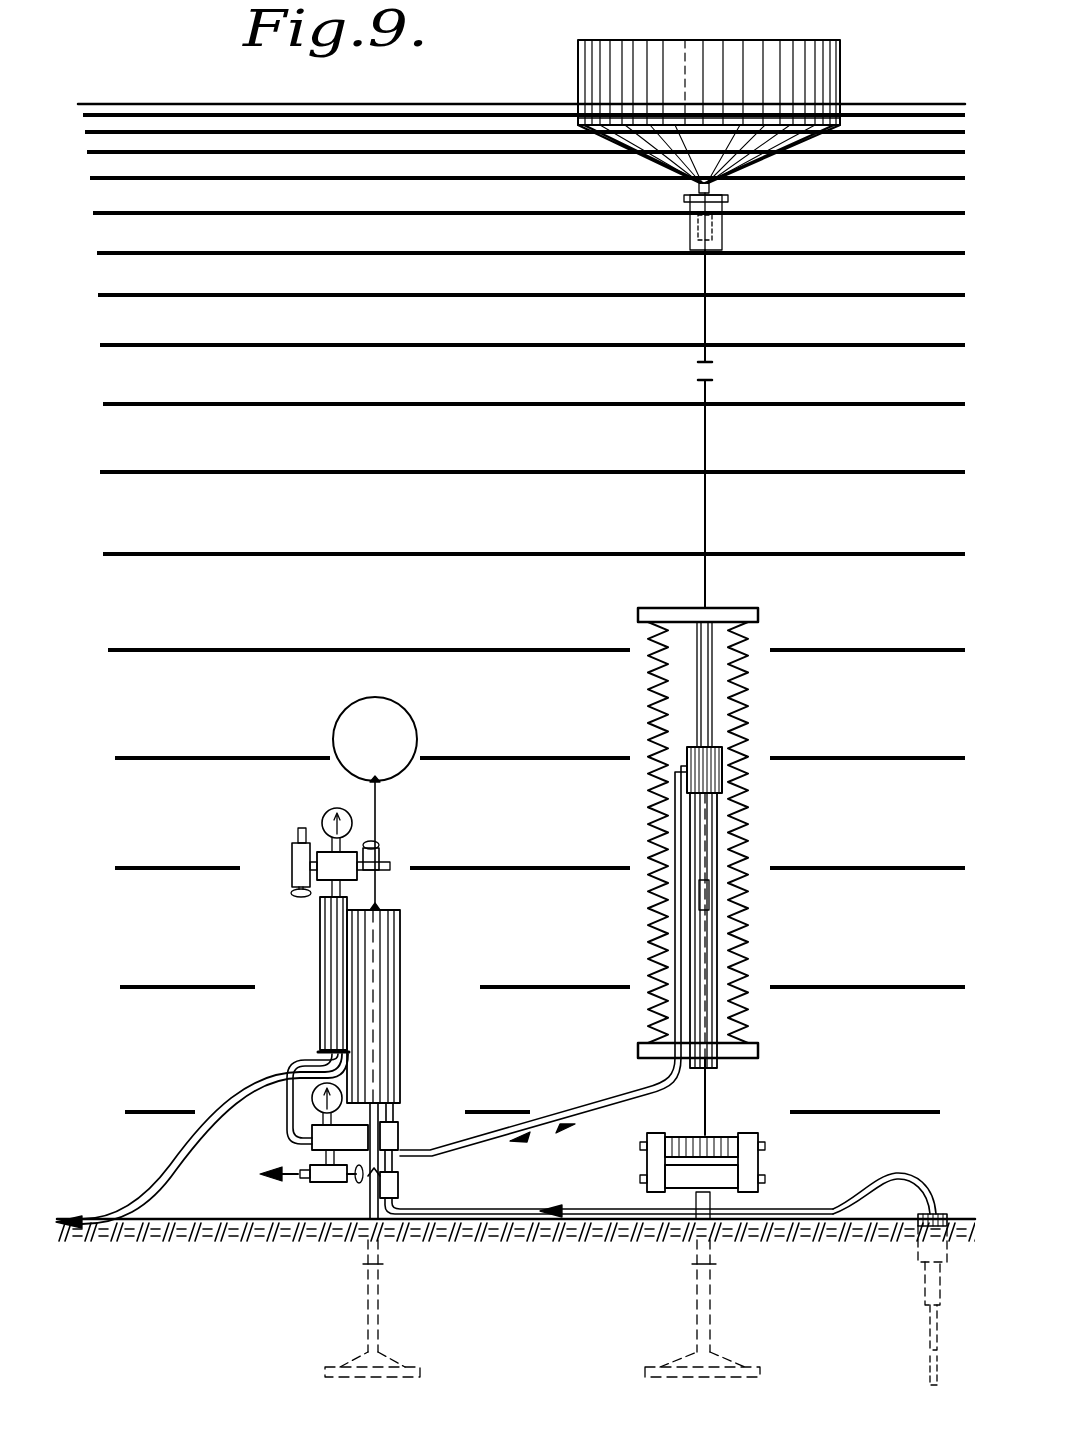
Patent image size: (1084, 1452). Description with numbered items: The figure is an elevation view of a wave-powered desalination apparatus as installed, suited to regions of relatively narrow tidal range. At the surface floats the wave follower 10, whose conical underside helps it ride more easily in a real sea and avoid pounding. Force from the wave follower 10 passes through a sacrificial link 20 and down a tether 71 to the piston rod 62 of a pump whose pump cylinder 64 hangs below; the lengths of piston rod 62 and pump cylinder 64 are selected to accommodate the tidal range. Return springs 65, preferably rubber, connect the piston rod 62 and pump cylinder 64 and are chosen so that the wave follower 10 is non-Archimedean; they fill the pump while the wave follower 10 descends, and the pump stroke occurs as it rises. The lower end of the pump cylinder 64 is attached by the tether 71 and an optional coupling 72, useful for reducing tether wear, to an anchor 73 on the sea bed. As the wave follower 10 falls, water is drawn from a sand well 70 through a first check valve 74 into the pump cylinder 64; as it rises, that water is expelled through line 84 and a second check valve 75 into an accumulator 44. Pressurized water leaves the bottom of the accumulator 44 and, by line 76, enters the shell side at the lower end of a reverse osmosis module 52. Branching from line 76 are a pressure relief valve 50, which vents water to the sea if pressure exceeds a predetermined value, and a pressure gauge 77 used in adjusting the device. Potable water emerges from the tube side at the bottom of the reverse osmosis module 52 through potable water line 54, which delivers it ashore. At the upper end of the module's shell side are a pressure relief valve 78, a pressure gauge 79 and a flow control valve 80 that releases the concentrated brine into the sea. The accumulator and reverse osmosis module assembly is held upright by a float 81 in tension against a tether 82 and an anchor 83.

The wave follower 10 is at (800, 68).
The sacrificial link 20 is at (722, 234).
The tether 71 is at (705, 506).
The piston rod 62 is at (705, 690).
The return springs 65 is at (728, 727).
The pump cylinder 64 is at (710, 945).
The line 84 is at (620, 1093).
The coupling 72 is at (758, 1138).
The anchor 73 is at (712, 1283).
The anchor 83 is at (385, 1280).
The sand well 70 is at (915, 1286).
The first check valve 74 is at (398, 1187).
The second check valve 75 is at (398, 1131).
The tether 82 is at (398, 1108).
The accumulator 44 is at (378, 992).
The float 81 is at (392, 738).
The flow control valve 80 is at (382, 854).
The pressure gauge 79 is at (330, 816).
The pressure relief valve 78 is at (298, 877).
The reverse osmosis module 52 is at (330, 975).
The pressure gauge 77 is at (320, 1082).
The line 76 is at (290, 1134).
The pressure relief valve 50 is at (326, 1182).
The potable water line 54 is at (262, 1120).